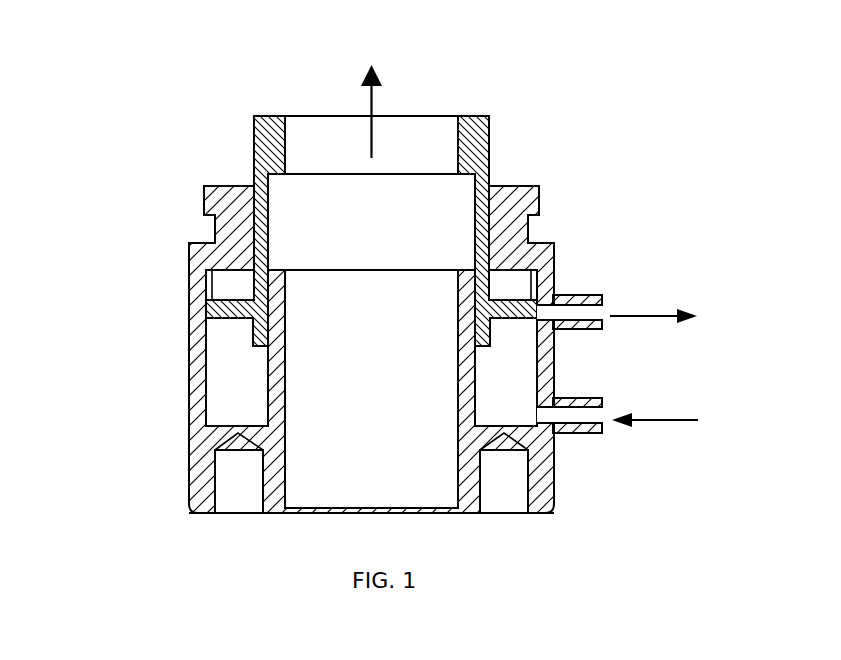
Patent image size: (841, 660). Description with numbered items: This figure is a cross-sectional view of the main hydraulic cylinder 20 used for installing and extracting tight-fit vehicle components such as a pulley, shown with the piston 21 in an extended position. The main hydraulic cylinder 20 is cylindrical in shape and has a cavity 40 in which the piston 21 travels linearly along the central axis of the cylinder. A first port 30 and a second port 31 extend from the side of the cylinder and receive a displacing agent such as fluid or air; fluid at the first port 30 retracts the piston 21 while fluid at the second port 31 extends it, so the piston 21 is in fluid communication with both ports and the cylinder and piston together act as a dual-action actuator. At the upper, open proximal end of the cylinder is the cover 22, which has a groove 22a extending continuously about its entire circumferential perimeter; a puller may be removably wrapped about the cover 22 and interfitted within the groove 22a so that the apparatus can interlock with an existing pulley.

The main hydraulic cylinder 20 is at (390, 289).
The piston 21 is at (472, 146).
The cover 22 is at (364, 322).
The groove 22a is at (215, 228).
The first port 30 is at (594, 296).
The second port 31 is at (600, 432).
The cavity 40 is at (384, 376).